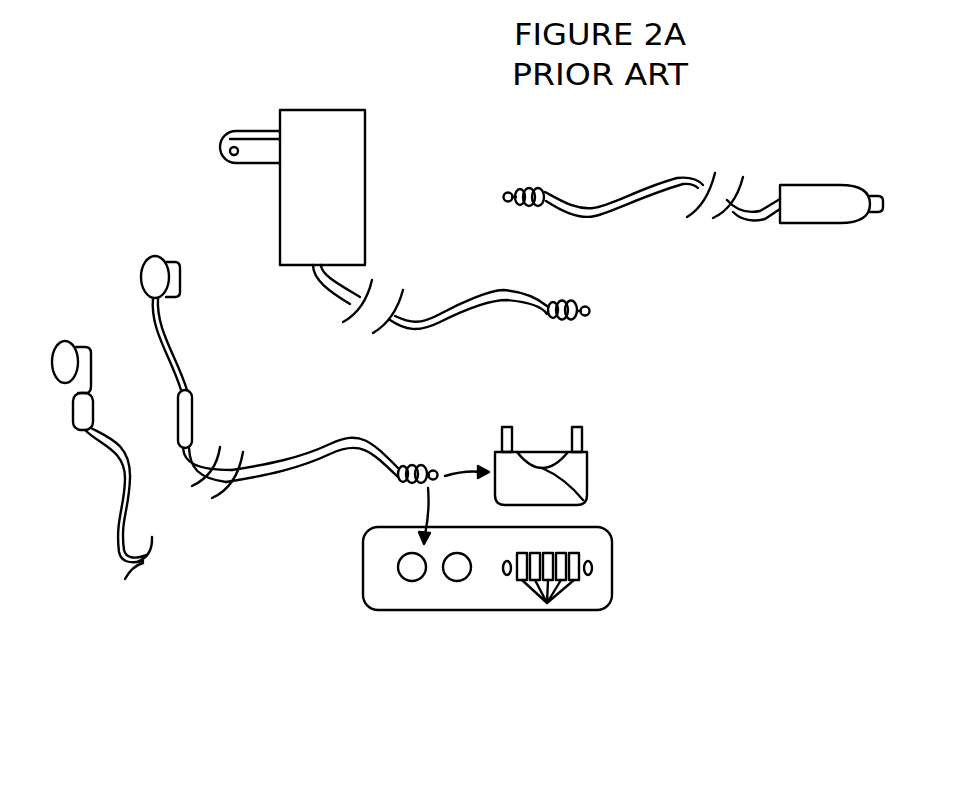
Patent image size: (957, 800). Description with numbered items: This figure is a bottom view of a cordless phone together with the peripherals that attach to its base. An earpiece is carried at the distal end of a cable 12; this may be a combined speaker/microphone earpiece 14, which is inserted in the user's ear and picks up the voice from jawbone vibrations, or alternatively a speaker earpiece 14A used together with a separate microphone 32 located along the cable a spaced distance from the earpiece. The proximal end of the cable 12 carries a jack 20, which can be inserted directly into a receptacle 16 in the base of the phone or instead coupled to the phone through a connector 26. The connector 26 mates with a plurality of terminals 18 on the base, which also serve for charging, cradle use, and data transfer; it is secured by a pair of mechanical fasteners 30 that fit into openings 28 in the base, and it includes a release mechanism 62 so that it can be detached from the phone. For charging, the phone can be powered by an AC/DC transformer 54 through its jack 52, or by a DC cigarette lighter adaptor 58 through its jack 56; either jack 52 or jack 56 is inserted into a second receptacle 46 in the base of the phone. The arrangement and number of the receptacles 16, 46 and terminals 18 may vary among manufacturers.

The cable 12 is at (258, 493).
The combined speaker/microphone earpiece 14 is at (88, 345).
The speaker earpiece 14A is at (180, 283).
The receptacle 16 is at (411, 581).
The terminals 18 is at (547, 603).
The jack 20 is at (418, 488).
The connector 26 is at (588, 470).
The openings 28 is at (507, 575).
The mechanical fasteners 30 is at (577, 427).
The microphone 32 is at (195, 413).
The receptacle 46 is at (457, 581).
The jack 52 is at (490, 298).
The AC/DC transformer 54 is at (368, 158).
The jack 56 is at (642, 186).
The DC cigarette lighter adaptor 58 is at (818, 224).
The release mechanism 62 is at (583, 502).